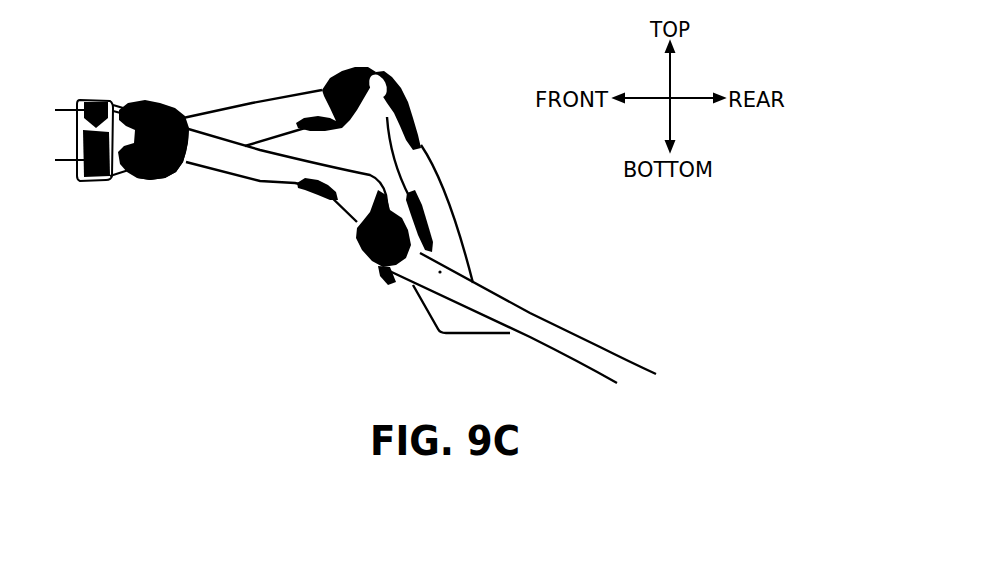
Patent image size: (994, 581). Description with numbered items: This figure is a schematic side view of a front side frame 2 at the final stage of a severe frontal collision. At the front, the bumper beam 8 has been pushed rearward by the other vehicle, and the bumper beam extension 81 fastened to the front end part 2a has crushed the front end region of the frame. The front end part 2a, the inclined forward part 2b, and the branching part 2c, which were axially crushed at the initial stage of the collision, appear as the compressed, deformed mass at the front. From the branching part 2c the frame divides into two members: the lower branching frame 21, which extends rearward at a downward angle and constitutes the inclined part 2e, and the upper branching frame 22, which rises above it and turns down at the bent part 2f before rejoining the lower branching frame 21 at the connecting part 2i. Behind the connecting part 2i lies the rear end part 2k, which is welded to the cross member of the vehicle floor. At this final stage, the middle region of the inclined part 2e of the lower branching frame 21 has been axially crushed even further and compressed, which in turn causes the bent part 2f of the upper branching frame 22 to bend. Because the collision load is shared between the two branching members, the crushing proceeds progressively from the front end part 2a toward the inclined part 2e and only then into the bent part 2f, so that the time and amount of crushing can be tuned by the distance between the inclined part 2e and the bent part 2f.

The front side frame 2 is at (234, 135).
The front end part 2a is at (115, 176).
The inclined forward part 2b is at (147, 177).
The branching part 2c is at (177, 170).
The inclined part 2e is at (343, 214).
The bent part 2f is at (395, 74).
The connecting part 2i is at (478, 302).
The rear end part 2k is at (527, 317).
The lower branching frame 21 is at (277, 186).
The upper branching frame 22 is at (318, 89).
The bumper beam 8 is at (70, 108).
The bumper beam extension 81 is at (96, 182).